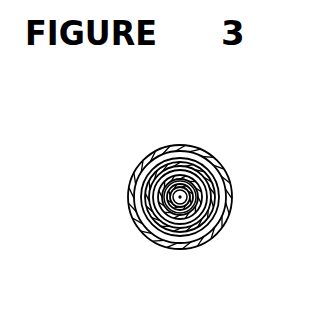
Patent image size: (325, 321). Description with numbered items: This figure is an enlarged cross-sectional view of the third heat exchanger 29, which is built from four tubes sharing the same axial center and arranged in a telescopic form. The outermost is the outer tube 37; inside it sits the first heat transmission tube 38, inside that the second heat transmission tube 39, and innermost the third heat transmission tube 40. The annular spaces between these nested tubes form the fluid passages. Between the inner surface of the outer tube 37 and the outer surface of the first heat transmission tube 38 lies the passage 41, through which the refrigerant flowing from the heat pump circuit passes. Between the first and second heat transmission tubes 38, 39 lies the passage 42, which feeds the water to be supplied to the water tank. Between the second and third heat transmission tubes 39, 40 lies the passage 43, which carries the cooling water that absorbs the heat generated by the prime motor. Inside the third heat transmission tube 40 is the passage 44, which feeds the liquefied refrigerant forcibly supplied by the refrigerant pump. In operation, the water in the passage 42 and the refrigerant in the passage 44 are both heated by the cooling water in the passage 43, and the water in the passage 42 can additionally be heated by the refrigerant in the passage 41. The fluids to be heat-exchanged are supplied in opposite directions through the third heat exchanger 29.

The third heat exchanger 29 is at (136, 164).
The outer tube 37 is at (208, 153).
The first heat transmission tube 38 is at (213, 186).
The second heat transmission tube 39 is at (200, 205).
The third heat transmission tube 40 is at (188, 207).
The passage 41 is at (185, 238).
The passage 42 is at (170, 223).
The passage 43 is at (165, 210).
The passage 44 is at (173, 193).